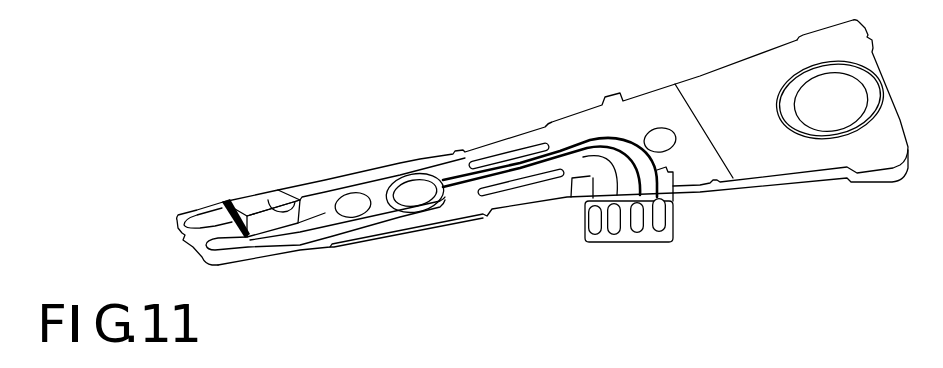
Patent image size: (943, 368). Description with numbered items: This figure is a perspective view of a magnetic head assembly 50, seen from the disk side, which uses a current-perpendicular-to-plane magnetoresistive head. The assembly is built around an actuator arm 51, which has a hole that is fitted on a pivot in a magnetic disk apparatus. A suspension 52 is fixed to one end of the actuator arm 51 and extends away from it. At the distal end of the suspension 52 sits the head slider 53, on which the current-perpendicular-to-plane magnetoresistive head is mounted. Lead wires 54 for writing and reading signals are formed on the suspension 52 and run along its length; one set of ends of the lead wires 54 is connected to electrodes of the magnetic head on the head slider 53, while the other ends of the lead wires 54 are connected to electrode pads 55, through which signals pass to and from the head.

The magnetic head assembly 50 is at (497, 97).
The actuator arm 51 is at (788, 158).
The suspension 52 is at (443, 163).
The head slider 53 is at (253, 192).
The lead wires 54 is at (395, 218).
The electrode pads 55 is at (637, 228).